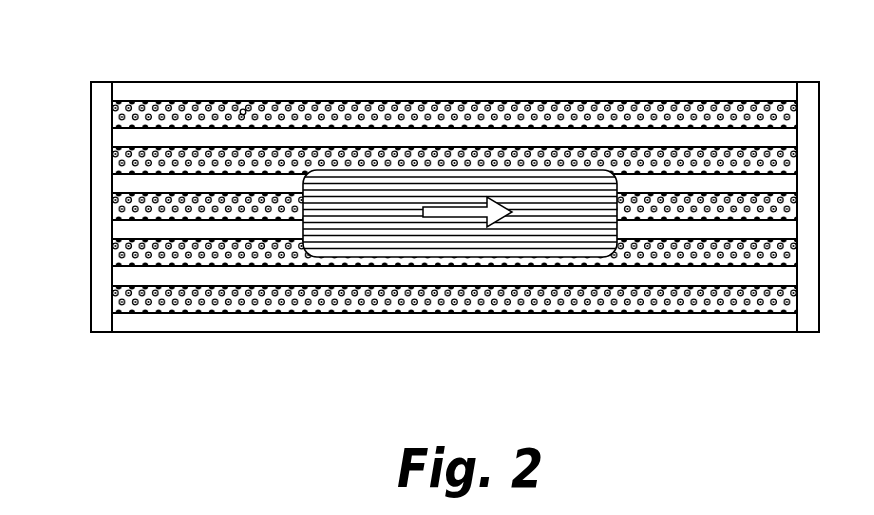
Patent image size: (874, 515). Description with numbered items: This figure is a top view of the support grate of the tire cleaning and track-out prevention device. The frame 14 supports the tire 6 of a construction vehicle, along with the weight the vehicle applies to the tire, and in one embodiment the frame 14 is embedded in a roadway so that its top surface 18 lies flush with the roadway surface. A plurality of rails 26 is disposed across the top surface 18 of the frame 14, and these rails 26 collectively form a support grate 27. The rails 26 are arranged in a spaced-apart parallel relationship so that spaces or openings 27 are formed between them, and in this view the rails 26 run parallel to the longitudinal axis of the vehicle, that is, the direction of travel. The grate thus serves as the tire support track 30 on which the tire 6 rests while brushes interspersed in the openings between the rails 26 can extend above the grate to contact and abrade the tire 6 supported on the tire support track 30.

The tire 6 is at (452, 175).
The frame 14 is at (100, 93).
The top surface 18 is at (190, 102).
The rails 26 is at (580, 95).
The support grate 27 is at (253, 94).
The tire support track 30 is at (420, 174).